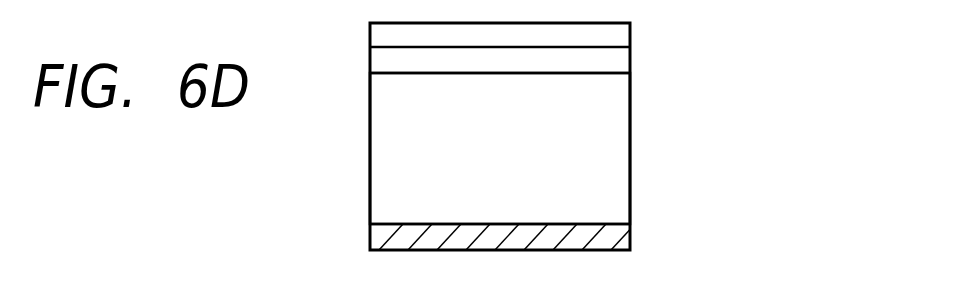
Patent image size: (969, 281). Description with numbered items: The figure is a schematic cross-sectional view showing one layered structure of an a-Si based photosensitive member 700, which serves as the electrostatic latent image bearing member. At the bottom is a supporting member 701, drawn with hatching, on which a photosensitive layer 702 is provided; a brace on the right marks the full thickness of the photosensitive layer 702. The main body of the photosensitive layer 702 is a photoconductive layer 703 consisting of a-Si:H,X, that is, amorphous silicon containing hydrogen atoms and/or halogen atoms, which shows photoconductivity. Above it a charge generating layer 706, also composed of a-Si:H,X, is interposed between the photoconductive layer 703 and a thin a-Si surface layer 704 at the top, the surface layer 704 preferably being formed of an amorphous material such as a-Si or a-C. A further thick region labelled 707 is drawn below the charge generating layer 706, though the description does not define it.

The photosensitive member 700 is at (355, 250).
The supporting member 701 is at (620, 233).
The photosensitive layer 702 is at (829, 24).
The photoconductive layer 703 is at (743, 225).
The surface layer 704 is at (618, 37).
The charge generating layer 706 is at (618, 61).
The thick layer 707 is at (618, 104).